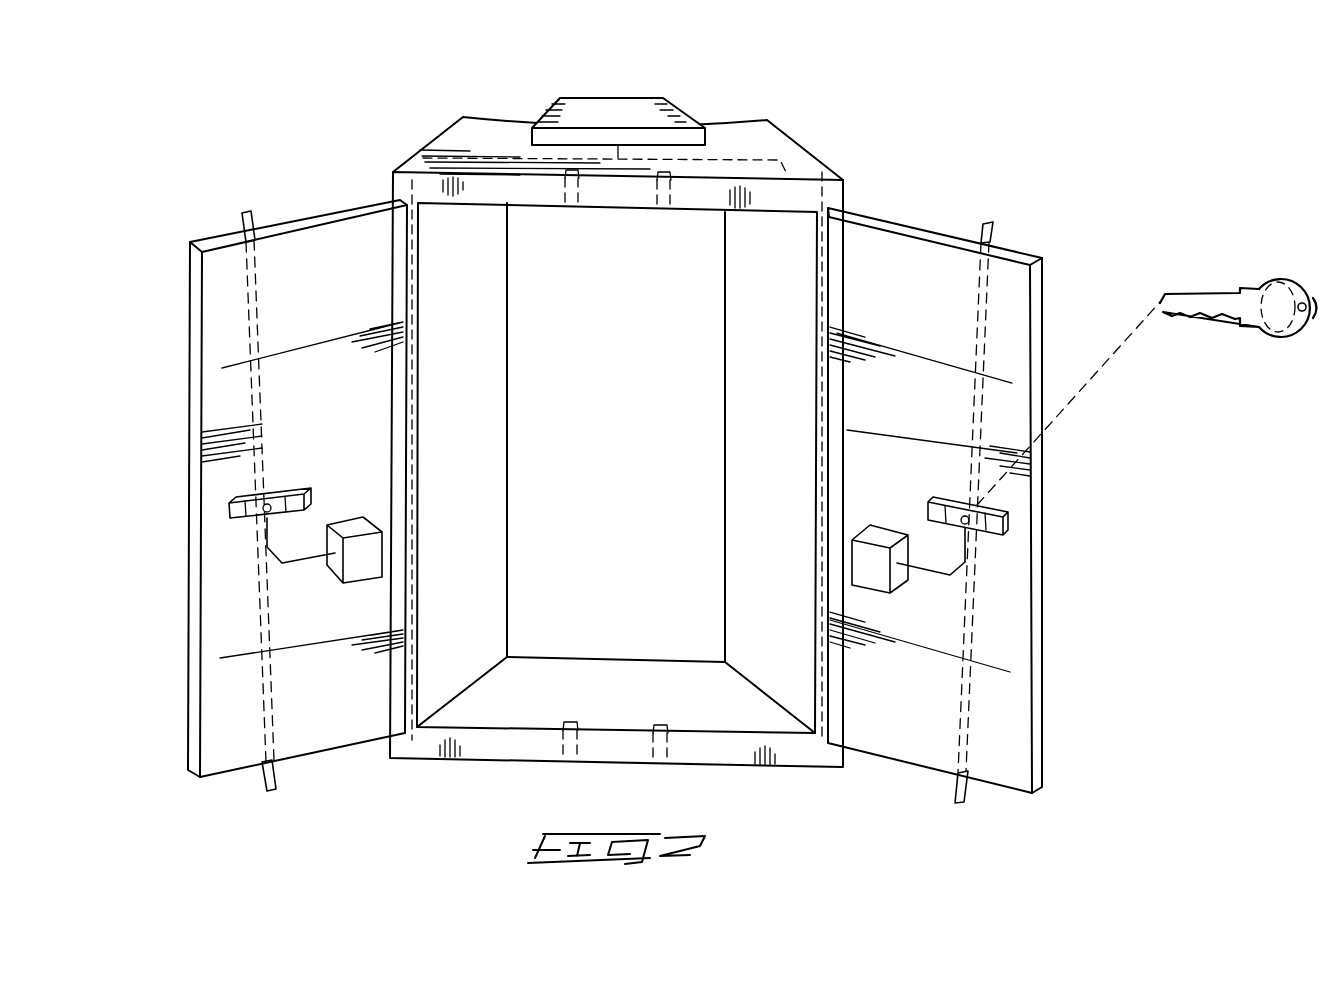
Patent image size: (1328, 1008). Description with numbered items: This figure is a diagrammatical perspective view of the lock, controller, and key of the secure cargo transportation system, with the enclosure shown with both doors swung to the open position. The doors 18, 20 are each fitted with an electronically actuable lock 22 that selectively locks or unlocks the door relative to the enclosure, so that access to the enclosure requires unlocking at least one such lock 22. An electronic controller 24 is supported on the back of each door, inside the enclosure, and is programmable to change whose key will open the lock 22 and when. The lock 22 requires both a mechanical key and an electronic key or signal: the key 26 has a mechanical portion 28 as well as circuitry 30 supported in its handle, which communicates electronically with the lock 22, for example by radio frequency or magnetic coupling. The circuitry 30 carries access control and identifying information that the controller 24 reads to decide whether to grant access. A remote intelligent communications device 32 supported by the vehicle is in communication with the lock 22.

The door 18 is at (217, 595).
The door 20 is at (969, 505).
The electronically actuable lock 22 is at (963, 530).
The electronic controller 24 is at (353, 527).
The key 26 is at (1147, 332).
The mechanical portion 28 is at (1200, 293).
The circuitry 30 is at (1284, 285).
The remote intelligent communications device 32 is at (610, 108).